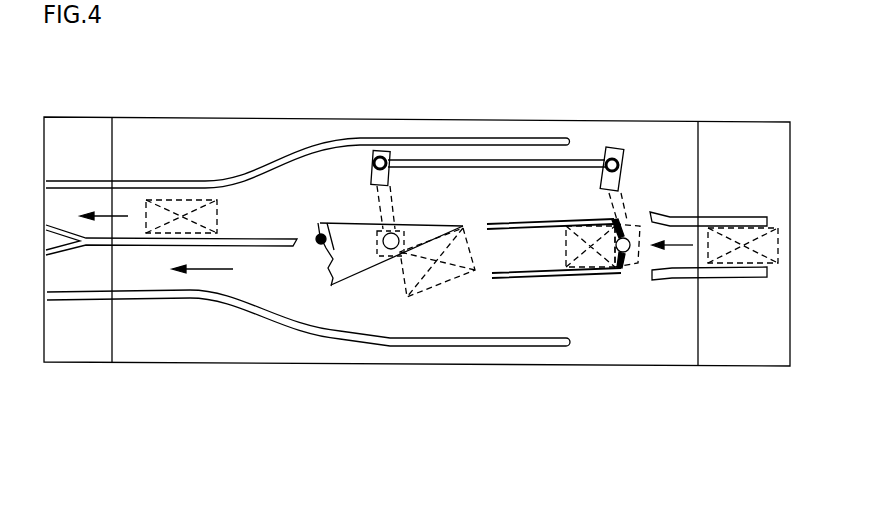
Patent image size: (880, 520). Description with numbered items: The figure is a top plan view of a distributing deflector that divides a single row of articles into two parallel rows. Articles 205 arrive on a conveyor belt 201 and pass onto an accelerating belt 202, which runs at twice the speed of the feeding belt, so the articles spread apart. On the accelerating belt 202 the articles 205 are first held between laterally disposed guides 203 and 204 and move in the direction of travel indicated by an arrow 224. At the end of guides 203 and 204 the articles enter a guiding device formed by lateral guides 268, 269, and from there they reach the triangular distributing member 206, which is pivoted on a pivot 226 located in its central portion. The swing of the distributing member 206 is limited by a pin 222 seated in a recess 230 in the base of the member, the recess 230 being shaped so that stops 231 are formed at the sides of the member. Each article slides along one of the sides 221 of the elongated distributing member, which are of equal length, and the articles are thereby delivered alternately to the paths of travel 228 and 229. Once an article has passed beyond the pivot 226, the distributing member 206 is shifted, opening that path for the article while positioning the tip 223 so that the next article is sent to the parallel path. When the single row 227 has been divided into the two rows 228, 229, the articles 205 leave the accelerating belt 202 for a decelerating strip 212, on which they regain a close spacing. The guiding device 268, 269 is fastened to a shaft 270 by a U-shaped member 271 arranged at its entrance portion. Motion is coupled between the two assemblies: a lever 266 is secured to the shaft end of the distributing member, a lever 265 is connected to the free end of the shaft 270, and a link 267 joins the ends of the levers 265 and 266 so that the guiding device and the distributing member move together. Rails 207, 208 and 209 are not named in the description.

The conveyor belt 201 is at (752, 338).
The accelerating belt 202 is at (638, 337).
The lateral guide 203 is at (705, 227).
The lateral guide 204 is at (684, 272).
The article 205 is at (168, 200).
The distributing member 206 is at (364, 244).
The upper guide rail 207 is at (305, 152).
The lower guide rail 208 is at (262, 312).
The middle guide rail 209 is at (282, 240).
The decelerating strip 212 is at (92, 215).
The side of distributing member 221 is at (455, 228).
The pin 222 is at (317, 244).
The tip of distributing member 223 is at (468, 222).
The arrow 224 is at (688, 247).
The pivot 226 is at (394, 250).
The single row of articles 227 is at (662, 213).
The path of travel 228 is at (248, 205).
The path of travel 229 is at (150, 270).
The recess 230 is at (338, 250).
The stop 231 is at (322, 222).
The lever 265 is at (627, 148).
The lever 266 is at (400, 152).
The link 267 is at (425, 158).
The lateral guide of guiding device 268 is at (513, 222).
The lateral guide of guiding device 269 is at (547, 283).
The shaft 270 is at (621, 256).
The U-shaped member 271 is at (617, 221).